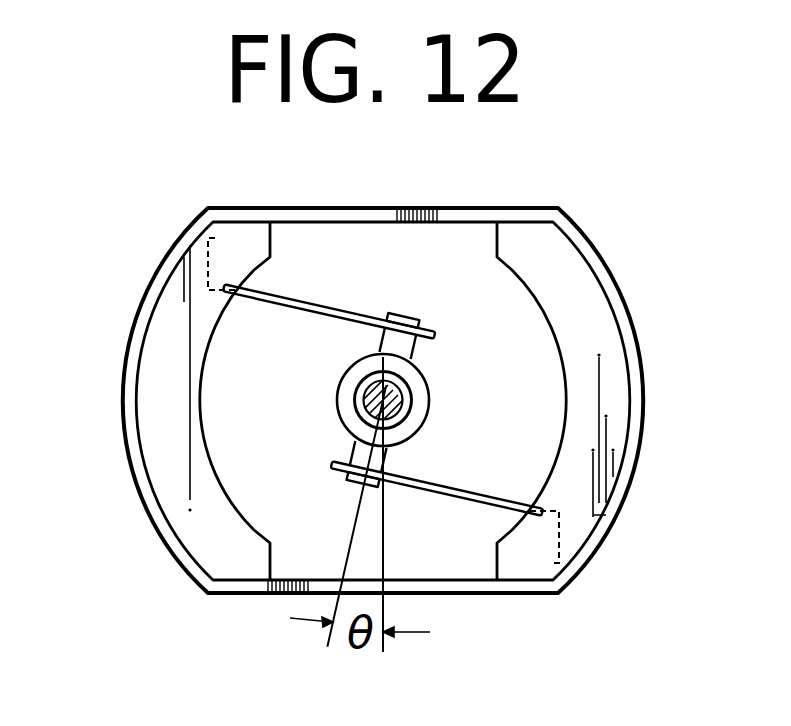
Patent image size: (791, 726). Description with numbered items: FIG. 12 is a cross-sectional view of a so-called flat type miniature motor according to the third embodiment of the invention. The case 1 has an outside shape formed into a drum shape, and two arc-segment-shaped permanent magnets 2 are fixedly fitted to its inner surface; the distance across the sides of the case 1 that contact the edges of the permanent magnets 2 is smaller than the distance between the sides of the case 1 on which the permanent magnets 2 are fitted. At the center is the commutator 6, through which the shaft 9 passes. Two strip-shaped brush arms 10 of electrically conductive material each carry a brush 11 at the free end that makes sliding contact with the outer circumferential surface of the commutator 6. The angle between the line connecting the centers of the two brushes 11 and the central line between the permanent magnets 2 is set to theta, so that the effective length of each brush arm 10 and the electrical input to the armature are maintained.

The case 1 is at (575, 235).
The permanent magnet 2 is at (182, 387).
The commutator 6 is at (428, 398).
The shaft 9 is at (401, 407).
The brush arm 10 is at (291, 301).
The brush 11 is at (412, 348).